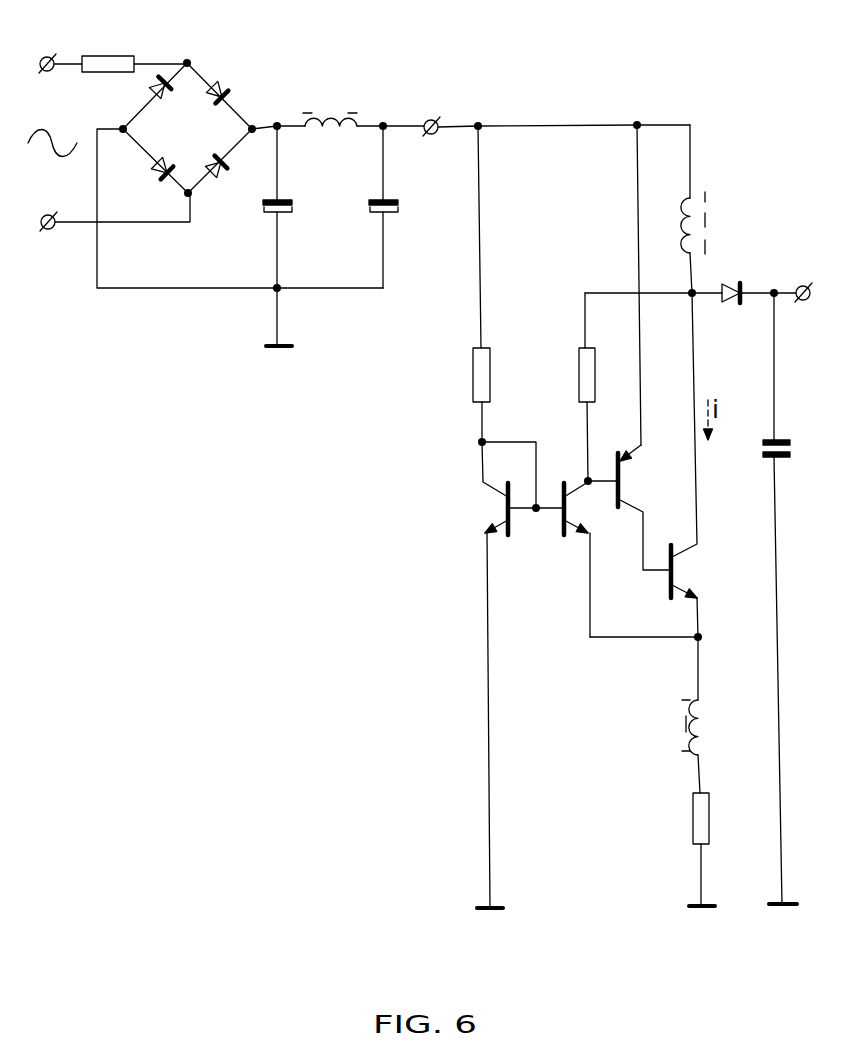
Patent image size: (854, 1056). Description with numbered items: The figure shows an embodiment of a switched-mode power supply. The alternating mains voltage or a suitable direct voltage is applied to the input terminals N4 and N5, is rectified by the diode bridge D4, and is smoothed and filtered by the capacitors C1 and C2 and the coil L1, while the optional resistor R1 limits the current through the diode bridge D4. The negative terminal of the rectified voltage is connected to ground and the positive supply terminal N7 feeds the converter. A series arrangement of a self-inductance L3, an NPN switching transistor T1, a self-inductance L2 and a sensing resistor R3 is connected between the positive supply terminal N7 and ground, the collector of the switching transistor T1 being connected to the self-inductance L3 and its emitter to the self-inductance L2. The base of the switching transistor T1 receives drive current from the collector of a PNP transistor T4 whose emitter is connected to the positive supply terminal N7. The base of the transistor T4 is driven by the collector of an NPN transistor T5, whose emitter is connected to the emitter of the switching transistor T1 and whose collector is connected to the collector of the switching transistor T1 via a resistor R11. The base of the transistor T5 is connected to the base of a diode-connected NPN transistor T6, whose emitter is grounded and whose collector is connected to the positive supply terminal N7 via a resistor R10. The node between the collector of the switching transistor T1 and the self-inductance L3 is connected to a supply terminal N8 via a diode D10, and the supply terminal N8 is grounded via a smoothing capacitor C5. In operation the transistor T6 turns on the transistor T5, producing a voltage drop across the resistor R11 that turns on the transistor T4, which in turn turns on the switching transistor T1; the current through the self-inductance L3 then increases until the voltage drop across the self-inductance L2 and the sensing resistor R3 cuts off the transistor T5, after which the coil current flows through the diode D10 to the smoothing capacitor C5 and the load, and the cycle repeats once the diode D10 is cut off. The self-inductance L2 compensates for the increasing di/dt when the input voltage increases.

The input terminal N4 is at (48, 56).
The resistor R1 is at (110, 55).
The diode bridge D4 is at (200, 137).
The input terminal N5 is at (50, 234).
The coil L1 is at (330, 115).
The positive supply terminal N7 is at (432, 119).
The capacitor C1 is at (293, 208).
The capacitor C2 is at (400, 208).
The self-inductance L3 is at (705, 219).
The supply terminal N8 is at (800, 286).
The diode D10 is at (726, 306).
The smoothing capacitor C5 is at (763, 448).
The resistor R10 is at (473, 378).
The resistor R11 is at (578, 378).
The PNP transistor T4 is at (640, 482).
The diode-connected NPN transistor T6 is at (490, 506).
The NPN transistor T5 is at (578, 530).
The switching transistor T1 is at (690, 572).
The self-inductance L2 is at (685, 722).
The sensing resistor R3 is at (692, 822).